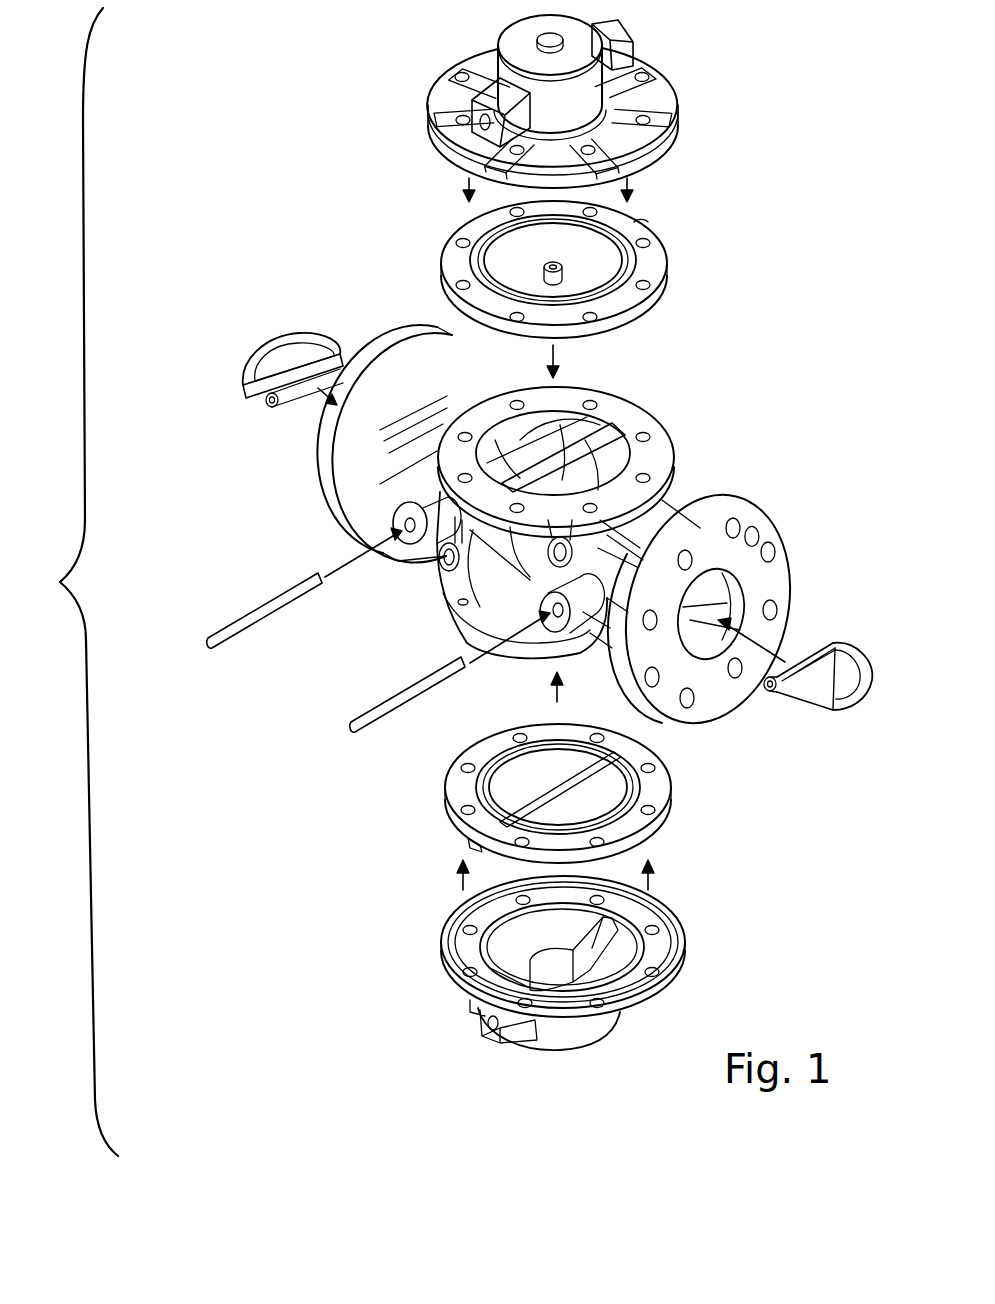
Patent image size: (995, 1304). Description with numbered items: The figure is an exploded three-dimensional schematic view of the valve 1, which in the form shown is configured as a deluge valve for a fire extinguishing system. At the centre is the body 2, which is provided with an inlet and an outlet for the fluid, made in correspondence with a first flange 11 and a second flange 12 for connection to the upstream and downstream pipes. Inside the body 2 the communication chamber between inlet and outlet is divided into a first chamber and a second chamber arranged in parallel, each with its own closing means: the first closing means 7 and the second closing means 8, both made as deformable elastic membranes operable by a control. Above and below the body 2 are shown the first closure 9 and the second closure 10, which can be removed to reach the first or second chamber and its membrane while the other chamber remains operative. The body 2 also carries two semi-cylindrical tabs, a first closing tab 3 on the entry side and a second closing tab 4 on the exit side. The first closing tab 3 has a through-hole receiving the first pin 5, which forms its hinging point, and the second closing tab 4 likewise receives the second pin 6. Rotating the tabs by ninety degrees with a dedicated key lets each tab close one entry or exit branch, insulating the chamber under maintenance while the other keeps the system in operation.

The valve 1 is at (74, 582).
The body 2 is at (420, 475).
The first closing tab 3 is at (246, 362).
The second closing tab 4 is at (810, 707).
The first pin 5 is at (247, 627).
The second pin 6 is at (412, 693).
The first closing means 7 is at (470, 226).
The second closing means 8 is at (452, 788).
The first closure 9 is at (440, 77).
The second closure 10 is at (452, 973).
The first flange 11 is at (328, 476).
The second flange 12 is at (732, 505).